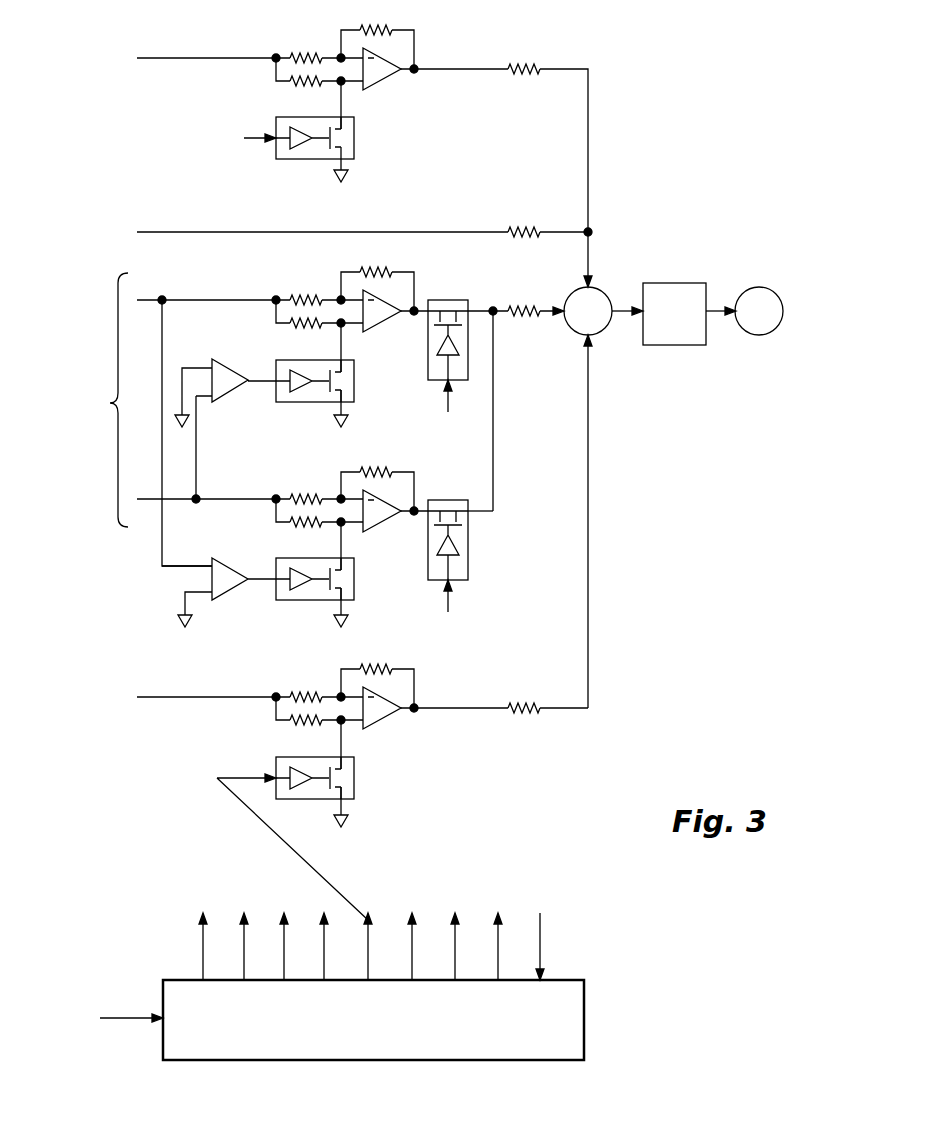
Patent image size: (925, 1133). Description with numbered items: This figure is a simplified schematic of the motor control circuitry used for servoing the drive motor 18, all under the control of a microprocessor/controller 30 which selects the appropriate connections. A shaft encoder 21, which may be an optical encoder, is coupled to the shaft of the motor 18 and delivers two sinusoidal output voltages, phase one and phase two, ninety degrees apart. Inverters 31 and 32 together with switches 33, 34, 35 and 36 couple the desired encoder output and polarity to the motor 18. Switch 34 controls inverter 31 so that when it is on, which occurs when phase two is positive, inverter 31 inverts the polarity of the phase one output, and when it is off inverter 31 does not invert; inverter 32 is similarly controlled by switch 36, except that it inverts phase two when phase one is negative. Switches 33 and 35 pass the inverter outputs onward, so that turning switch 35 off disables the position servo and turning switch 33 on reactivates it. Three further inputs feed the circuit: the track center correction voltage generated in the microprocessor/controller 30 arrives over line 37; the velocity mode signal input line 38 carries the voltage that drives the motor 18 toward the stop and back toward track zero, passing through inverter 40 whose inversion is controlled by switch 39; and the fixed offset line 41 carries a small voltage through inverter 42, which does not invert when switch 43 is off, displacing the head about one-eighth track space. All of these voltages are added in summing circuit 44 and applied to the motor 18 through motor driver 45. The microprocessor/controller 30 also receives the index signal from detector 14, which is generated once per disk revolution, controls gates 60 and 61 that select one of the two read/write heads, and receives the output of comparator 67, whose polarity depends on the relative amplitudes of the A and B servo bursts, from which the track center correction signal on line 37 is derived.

The detector 14 is at (120, 1020).
The drive motor 18 is at (752, 336).
The shaft encoder 21 is at (201, 419).
The microprocessor/controller 30 is at (618, 990).
The inverter 31 is at (389, 338).
The inverter 32 is at (390, 546).
The switch 33 is at (443, 300).
The switch 34 is at (297, 406).
The switch 35 is at (441, 500).
The switch 36 is at (305, 601).
The line 37 is at (176, 234).
The velocity mode signal input line 38 is at (176, 699).
The switch 39 is at (290, 800).
The inverter 40 is at (400, 733).
The fixed offset line 41 is at (170, 60).
The inverter 42 is at (394, 85).
The switch 43 is at (298, 159).
The summing circuit 44 is at (605, 334).
The motor driver 45 is at (666, 283).
The gate 60 is at (455, 897).
The gate 61 is at (498, 897).
The comparator 67 is at (540, 897).